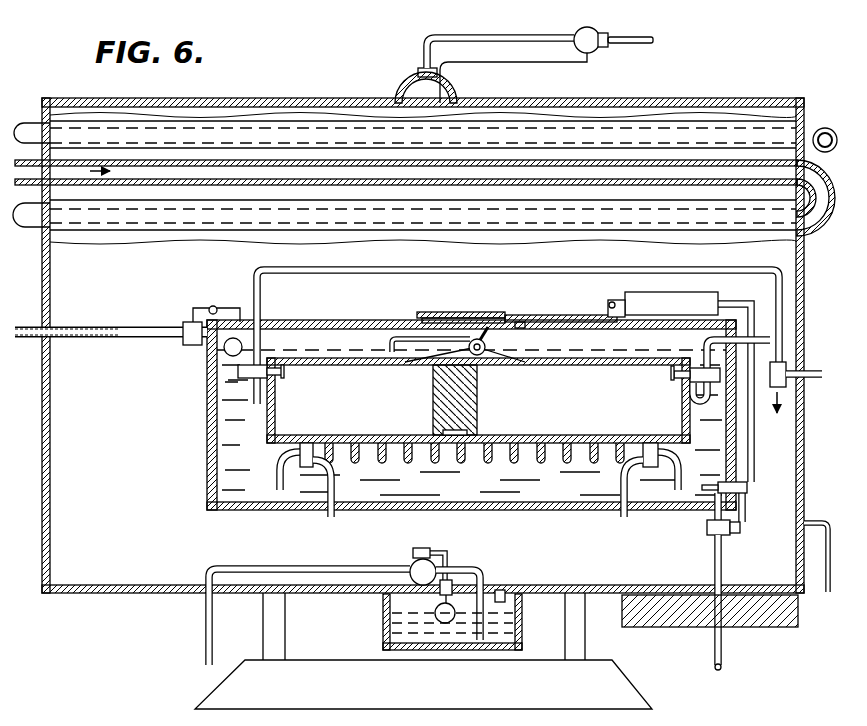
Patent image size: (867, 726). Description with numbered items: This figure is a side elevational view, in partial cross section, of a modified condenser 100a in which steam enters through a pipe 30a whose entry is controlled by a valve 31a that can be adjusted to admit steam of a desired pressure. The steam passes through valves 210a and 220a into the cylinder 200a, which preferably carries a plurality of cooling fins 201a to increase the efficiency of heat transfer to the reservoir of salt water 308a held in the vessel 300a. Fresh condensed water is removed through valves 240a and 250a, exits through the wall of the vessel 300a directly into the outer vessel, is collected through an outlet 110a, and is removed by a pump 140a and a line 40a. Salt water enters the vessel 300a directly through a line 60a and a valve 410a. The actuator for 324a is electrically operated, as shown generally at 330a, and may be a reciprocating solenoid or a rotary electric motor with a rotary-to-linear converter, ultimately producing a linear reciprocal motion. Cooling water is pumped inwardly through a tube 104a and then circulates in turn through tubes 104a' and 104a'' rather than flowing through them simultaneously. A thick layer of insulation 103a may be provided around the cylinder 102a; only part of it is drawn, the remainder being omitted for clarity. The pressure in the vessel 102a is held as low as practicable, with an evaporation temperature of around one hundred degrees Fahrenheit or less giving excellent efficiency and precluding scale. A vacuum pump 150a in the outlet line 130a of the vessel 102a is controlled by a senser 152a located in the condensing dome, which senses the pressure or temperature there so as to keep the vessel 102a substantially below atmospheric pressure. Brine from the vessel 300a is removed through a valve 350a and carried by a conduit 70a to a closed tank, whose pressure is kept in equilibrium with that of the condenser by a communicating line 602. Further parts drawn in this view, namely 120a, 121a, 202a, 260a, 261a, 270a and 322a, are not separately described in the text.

The condenser 100a is at (146, 601).
The cylinder 102a is at (50, 470).
The layer of insulation 103a is at (745, 628).
The tube 104a is at (425, 194).
The tube 104a' is at (404, 210).
The tube 104a'' is at (425, 142).
The outlet 110a is at (503, 590).
The reservoir 120a is at (383, 625).
The return pipe 121a is at (484, 580).
The outlet line 130a is at (548, 38).
The pump 140a is at (413, 552).
The vacuum pump 150a is at (598, 50).
The senser 152a is at (455, 98).
The pipe 30a is at (808, 380).
The valve 31a is at (788, 368).
The line 40a is at (213, 632).
The line 60a is at (125, 330).
The conduit 70a is at (722, 668).
The cylinder 200a is at (520, 437).
The cooling fins 201a is at (367, 444).
The partition block 202a is at (478, 397).
The valve 210a is at (698, 378).
The valve 220a is at (270, 381).
The valve 240a is at (312, 445).
The valve 250a is at (653, 431).
The left drain pipe 260a is at (335, 517).
The right drain pipe 261a is at (624, 517).
The pivot linkage 270a is at (490, 340).
The vessel 300a is at (498, 511).
The reservoir of salt water 308a is at (352, 350).
The cover plate 322a is at (488, 312).
The actuated element 324a is at (580, 317).
The electrical actuator 330a is at (687, 292).
The valve 350a is at (707, 533).
The valve 410a is at (195, 346).
The communicating line 602 is at (824, 597).